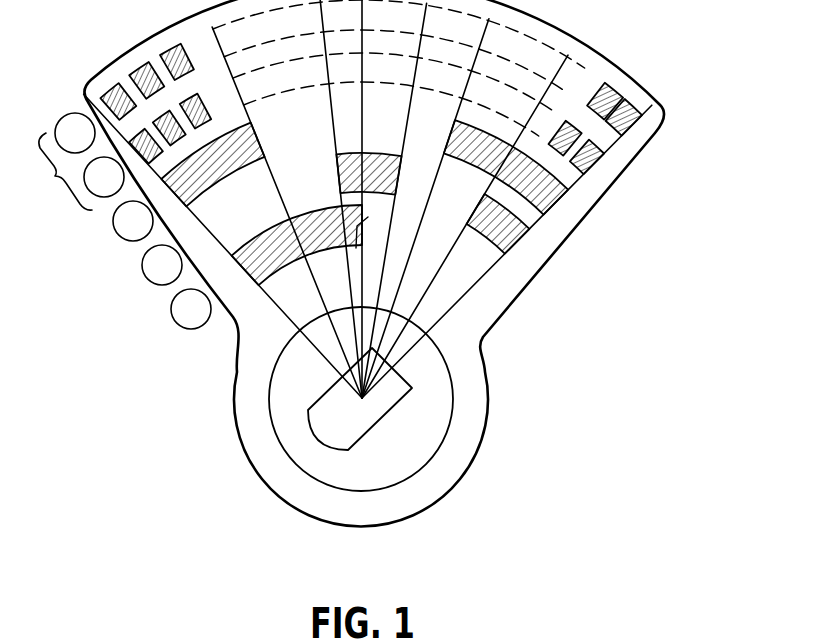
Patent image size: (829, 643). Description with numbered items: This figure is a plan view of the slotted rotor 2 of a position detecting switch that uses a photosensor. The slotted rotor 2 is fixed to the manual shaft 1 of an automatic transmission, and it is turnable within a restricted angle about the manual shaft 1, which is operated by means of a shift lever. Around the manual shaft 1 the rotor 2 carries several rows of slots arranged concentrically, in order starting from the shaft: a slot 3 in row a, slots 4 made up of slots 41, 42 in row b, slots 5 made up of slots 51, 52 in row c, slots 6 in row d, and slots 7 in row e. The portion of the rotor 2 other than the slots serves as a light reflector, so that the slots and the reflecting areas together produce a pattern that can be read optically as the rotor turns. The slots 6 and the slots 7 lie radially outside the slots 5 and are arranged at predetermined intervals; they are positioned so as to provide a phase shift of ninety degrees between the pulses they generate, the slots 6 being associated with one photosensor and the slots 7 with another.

The manual shaft 1 is at (385, 400).
The slotted rotor 2 is at (511, 316).
The slot 3 is at (262, 262).
The slots 4 is at (537, 233).
The slot 41 is at (385, 176).
The slot 42 is at (513, 243).
The slots 5 is at (552, 197).
The slot 51 is at (227, 157).
The slot 52 is at (483, 147).
The slots 6 is at (597, 163).
The slots 7 is at (637, 122).